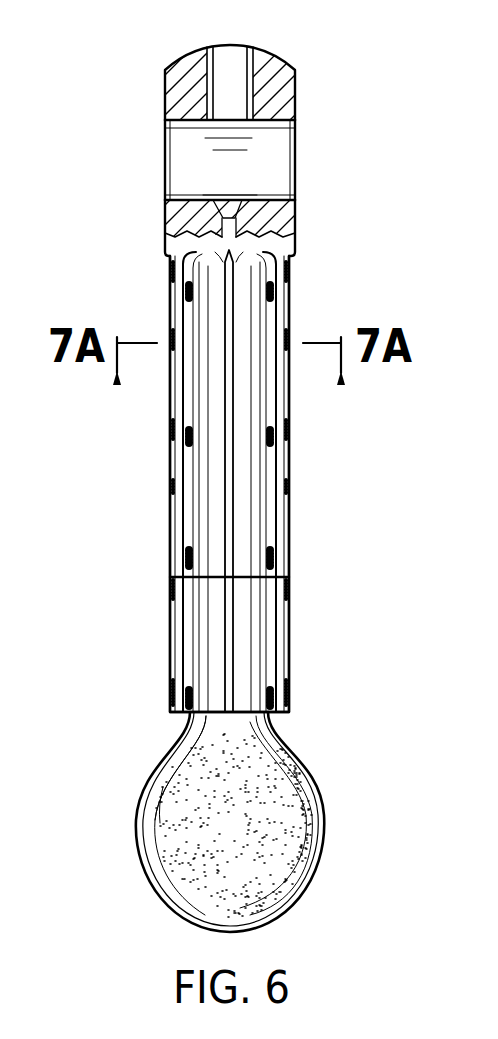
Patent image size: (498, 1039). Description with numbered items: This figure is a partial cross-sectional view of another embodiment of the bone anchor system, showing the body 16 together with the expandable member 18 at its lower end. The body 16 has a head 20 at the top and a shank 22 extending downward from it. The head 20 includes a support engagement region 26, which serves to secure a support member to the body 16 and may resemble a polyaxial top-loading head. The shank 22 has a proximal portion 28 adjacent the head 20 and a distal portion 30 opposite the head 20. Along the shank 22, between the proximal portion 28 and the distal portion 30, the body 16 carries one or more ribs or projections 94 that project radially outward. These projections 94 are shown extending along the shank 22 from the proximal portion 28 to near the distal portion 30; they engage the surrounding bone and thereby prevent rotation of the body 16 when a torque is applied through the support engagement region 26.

The body 16 is at (293, 65).
The expandable member 18 is at (309, 886).
The head 20 is at (165, 70).
The shank 22 is at (185, 497).
The support engagement region 26 is at (272, 123).
The proximal portion 28 is at (292, 262).
The distal portion 30 is at (290, 645).
The projections 94 is at (175, 428).